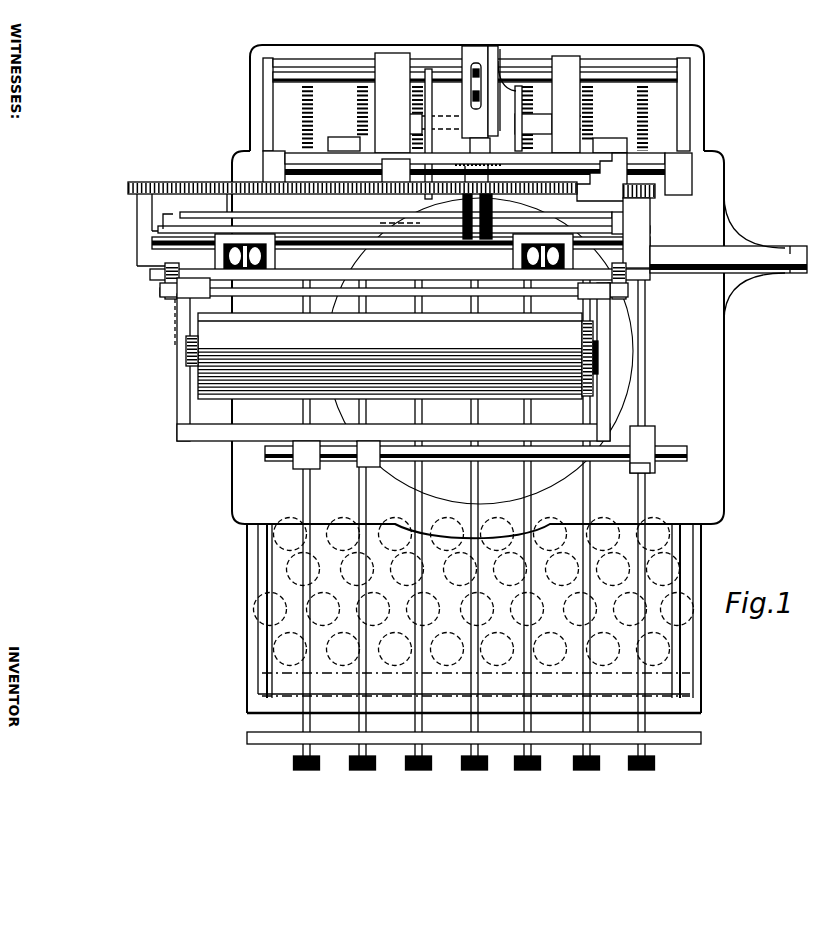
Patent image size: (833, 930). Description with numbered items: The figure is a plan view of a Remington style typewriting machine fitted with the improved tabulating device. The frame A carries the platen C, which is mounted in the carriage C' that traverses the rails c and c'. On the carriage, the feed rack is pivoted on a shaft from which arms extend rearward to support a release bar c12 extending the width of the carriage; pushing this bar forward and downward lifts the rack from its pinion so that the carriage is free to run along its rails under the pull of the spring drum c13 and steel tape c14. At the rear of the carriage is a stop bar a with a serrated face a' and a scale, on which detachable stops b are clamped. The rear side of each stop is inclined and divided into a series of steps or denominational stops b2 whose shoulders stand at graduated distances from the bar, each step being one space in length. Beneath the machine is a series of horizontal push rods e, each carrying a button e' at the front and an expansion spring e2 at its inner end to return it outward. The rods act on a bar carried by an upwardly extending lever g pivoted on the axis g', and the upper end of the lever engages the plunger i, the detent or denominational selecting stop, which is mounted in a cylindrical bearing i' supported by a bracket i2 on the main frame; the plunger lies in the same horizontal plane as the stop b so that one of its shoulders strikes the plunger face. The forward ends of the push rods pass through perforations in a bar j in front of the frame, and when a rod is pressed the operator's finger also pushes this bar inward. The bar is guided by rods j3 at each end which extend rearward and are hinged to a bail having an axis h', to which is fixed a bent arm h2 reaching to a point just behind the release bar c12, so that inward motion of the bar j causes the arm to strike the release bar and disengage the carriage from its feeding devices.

The frame A is at (478, 291).
The stop bar a is at (372, 190).
The serrated face a' is at (182, 213).
The stop b is at (634, 177).
The denominational stops b2 is at (598, 165).
The rail c is at (728, 257).
The rail c' is at (479, 449).
The release bar c12 is at (440, 222).
The spring drum c13 is at (250, 208).
The steel tape c14 is at (637, 222).
The platen C is at (392, 356).
The carriage C' is at (411, 352).
The push rods e is at (494, 607).
The button e' is at (531, 525).
The expansion springs e2 is at (492, 119).
The lever g is at (462, 92).
The axis g' is at (546, 66).
The axis h' is at (475, 48).
The bent arm h2 is at (432, 87).
The plunger i is at (469, 161).
The cylindrical bearing i' is at (500, 73).
The bracket i2 is at (506, 75).
The bar j is at (700, 738).
The guide rods j3 is at (723, 665).